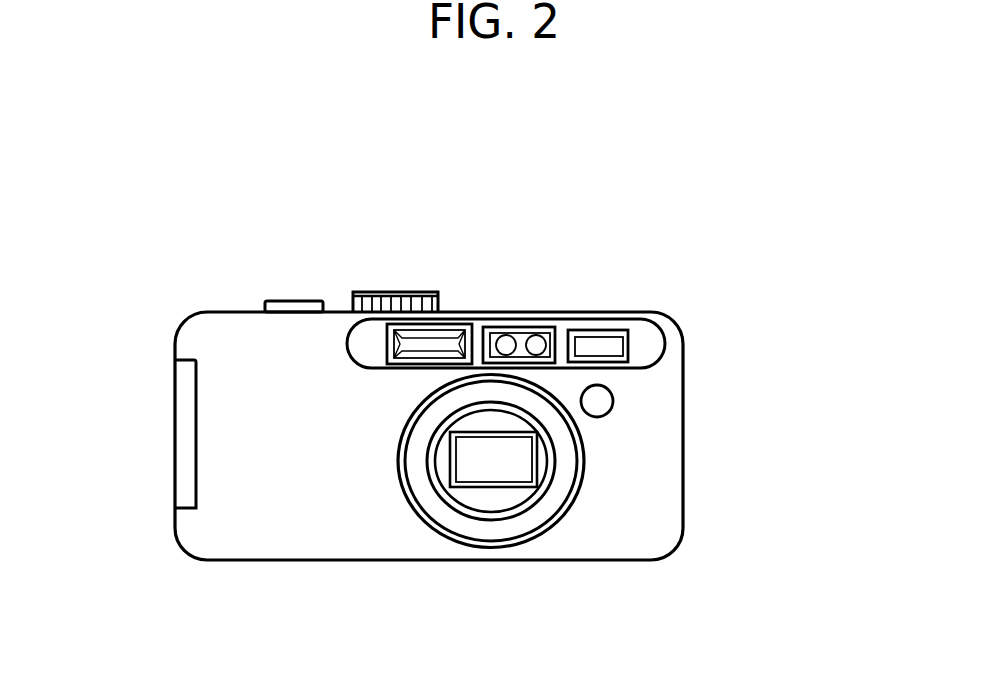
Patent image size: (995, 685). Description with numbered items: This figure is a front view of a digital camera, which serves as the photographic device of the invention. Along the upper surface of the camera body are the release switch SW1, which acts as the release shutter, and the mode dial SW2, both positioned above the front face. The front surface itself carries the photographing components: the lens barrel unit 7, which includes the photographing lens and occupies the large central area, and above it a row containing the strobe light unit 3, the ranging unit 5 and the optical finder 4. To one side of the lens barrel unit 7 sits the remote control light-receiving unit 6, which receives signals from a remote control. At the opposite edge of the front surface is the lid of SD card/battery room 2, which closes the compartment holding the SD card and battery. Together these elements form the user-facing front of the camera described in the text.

The release switch SW1 is at (328, 237).
The mode dial SW2 is at (437, 265).
The strobe light unit 3 is at (390, 352).
The ranging unit 5 is at (541, 337).
The optical finder 4 is at (613, 347).
The remote control light-receiving unit 6 is at (607, 401).
The lens barrel unit 7 is at (495, 502).
The lid of SD card/battery room 2 is at (183, 508).